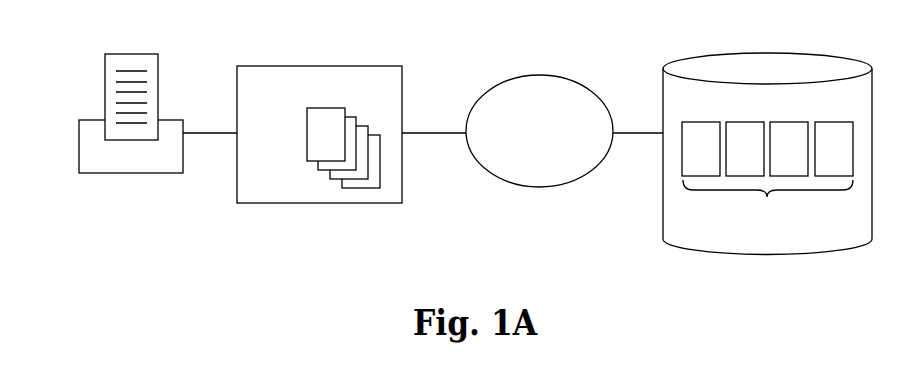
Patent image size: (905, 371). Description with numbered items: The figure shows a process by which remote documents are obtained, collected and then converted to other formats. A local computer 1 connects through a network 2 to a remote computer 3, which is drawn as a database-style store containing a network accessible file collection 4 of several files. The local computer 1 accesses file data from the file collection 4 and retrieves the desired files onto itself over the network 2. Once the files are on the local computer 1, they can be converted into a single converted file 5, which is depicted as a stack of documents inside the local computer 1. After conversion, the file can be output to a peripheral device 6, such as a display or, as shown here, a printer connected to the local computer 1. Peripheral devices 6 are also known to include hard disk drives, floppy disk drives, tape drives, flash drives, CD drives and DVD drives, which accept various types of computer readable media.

The local computer 1 is at (328, 66).
The network 2 is at (546, 75).
The remote computer 3 is at (798, 53).
The network accessible file collection 4 is at (767, 173).
The single converted file 5 is at (307, 138).
The peripheral device 6 is at (158, 78).